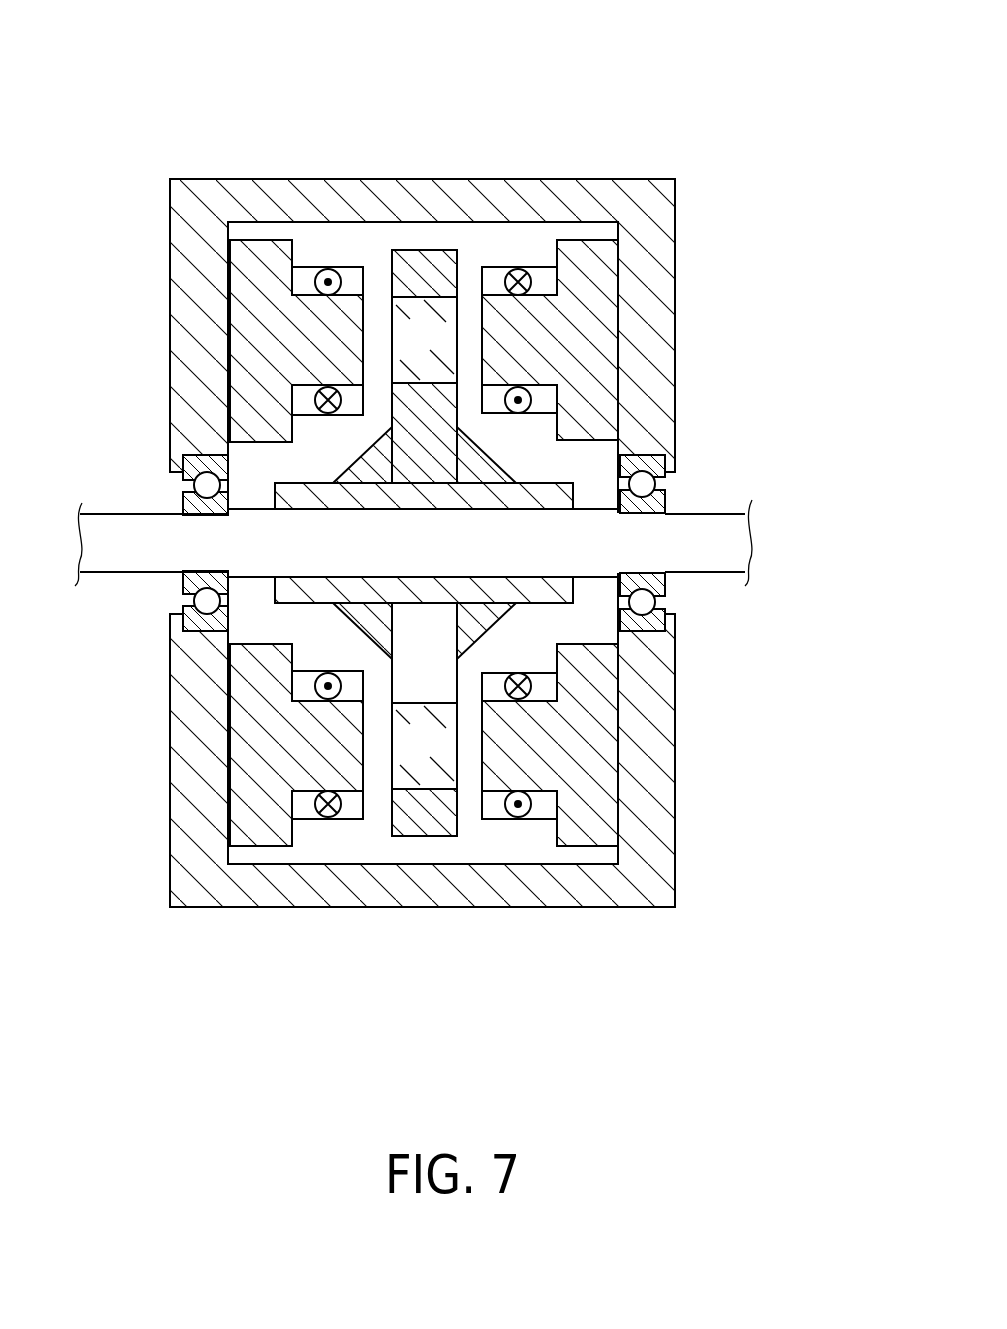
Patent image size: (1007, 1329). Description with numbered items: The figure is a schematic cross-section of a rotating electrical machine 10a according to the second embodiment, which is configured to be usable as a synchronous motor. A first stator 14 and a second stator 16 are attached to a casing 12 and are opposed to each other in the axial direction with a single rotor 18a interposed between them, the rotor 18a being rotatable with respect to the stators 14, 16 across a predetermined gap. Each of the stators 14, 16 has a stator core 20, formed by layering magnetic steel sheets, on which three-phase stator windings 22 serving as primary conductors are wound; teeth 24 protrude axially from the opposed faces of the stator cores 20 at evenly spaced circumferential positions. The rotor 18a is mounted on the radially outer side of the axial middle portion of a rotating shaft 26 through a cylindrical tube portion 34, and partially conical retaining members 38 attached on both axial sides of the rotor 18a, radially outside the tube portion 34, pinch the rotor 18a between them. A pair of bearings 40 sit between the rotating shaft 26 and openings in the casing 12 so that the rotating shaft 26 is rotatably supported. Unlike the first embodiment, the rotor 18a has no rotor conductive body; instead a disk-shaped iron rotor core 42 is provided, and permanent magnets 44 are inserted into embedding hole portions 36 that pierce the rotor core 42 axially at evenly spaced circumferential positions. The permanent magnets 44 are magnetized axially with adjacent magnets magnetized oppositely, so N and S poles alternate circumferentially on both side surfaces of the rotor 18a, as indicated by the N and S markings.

The rotating electrical machine 10a is at (593, 123).
The casing 12 is at (652, 250).
The first stator 14 is at (240, 352).
The second stator 16 is at (587, 316).
The rotor 18a is at (425, 262).
The stator core 20 is at (257, 783).
The stator windings 22 is at (307, 275).
The teeth 24 is at (350, 312).
The rotating shaft 26 is at (697, 522).
The tube portion 34 is at (553, 490).
The embedding hole portions 36 is at (422, 295).
The retaining members 38 is at (368, 463).
The bearings 40 is at (183, 587).
The rotor core 42 is at (408, 822).
The permanent magnets 44 is at (446, 352).